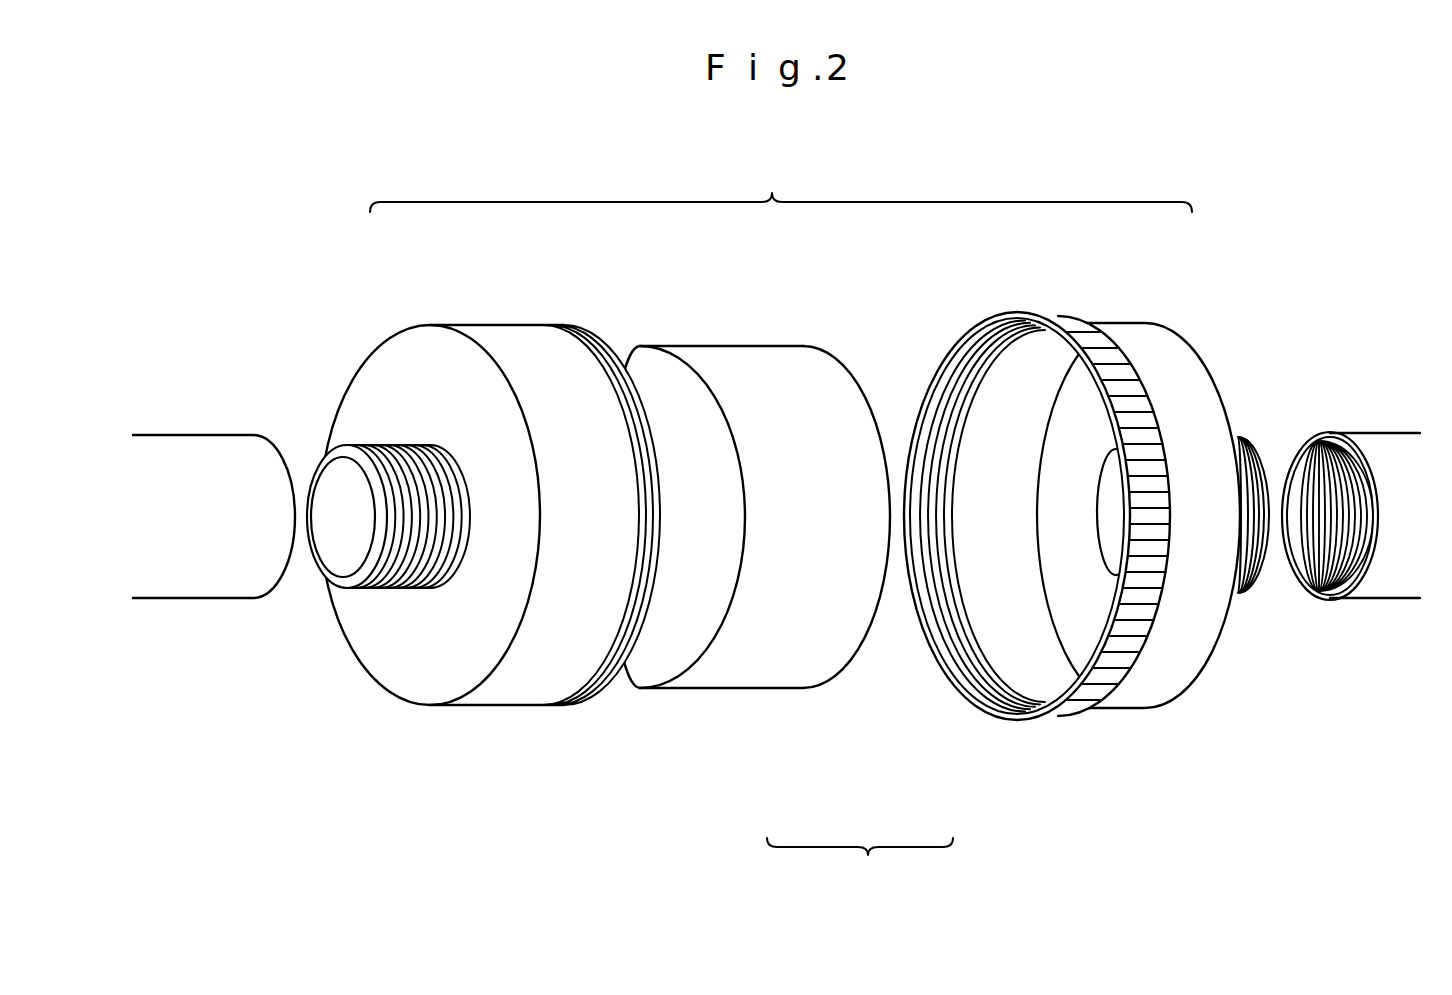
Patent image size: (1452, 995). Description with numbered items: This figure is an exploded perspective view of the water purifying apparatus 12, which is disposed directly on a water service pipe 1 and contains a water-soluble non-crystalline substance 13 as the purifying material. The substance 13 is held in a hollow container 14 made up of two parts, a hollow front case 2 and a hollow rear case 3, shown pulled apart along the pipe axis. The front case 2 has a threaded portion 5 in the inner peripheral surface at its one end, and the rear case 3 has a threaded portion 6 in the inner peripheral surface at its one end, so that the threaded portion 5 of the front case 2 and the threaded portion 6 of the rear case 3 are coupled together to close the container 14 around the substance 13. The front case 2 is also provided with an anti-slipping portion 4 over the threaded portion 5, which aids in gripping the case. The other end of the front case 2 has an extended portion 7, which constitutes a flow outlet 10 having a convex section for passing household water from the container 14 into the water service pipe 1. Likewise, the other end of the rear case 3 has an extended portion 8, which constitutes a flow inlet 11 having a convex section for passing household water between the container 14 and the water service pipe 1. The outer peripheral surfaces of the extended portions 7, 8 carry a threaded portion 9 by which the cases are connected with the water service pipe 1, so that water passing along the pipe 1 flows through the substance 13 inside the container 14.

The water service pipe 1 is at (197, 435).
The front case 2 is at (1123, 703).
The rear case 3 is at (540, 693).
The anti-slipping portion 4 is at (1082, 320).
The threaded portion 5 is at (958, 380).
The threaded portion 6 is at (598, 347).
The extended portion 7 is at (1255, 438).
The extended portion 8 is at (373, 444).
The threaded portion 9 is at (1302, 482).
The flow outlet 10 is at (1107, 527).
The flow inlet 11 is at (343, 547).
The water purifying apparatus 12 is at (781, 185).
The water-soluble non-crystalline substance 13 is at (810, 623).
The hollow container 14 is at (860, 866).